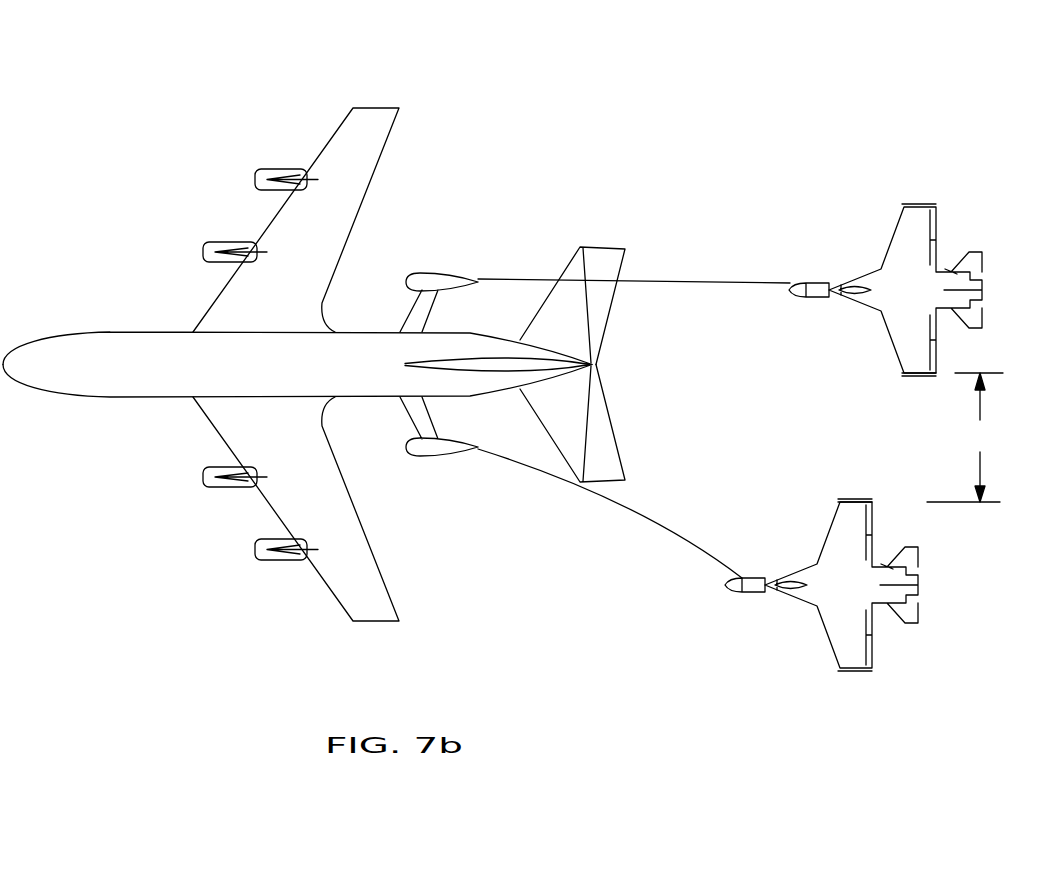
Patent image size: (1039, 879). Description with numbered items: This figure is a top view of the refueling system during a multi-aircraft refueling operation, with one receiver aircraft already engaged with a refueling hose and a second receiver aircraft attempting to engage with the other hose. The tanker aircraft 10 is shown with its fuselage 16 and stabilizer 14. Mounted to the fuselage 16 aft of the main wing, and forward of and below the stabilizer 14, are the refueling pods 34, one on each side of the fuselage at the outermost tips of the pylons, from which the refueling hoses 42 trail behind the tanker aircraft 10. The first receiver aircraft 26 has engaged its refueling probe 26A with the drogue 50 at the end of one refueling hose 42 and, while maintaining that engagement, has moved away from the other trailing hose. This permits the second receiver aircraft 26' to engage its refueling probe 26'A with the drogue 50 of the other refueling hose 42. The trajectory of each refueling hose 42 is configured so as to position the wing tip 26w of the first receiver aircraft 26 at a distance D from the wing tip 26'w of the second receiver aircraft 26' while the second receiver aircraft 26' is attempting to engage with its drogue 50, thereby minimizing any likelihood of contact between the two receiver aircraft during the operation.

The tanker aircraft 10 is at (348, 364).
The stabilizer 14 is at (590, 440).
The fuselage 16 is at (115, 383).
The refueling pod 34 is at (437, 452).
The refueling hose 42 is at (678, 273).
The drogue 50 is at (803, 282).
The first receiver aircraft 26 is at (851, 556).
The refueling probe 26A is at (770, 578).
The wing tip 26w is at (855, 500).
The second receiver aircraft 26' is at (921, 301).
The refueling probe 26'A is at (855, 240).
The wing tip 26'w is at (883, 395).
The distance D is at (965, 437).